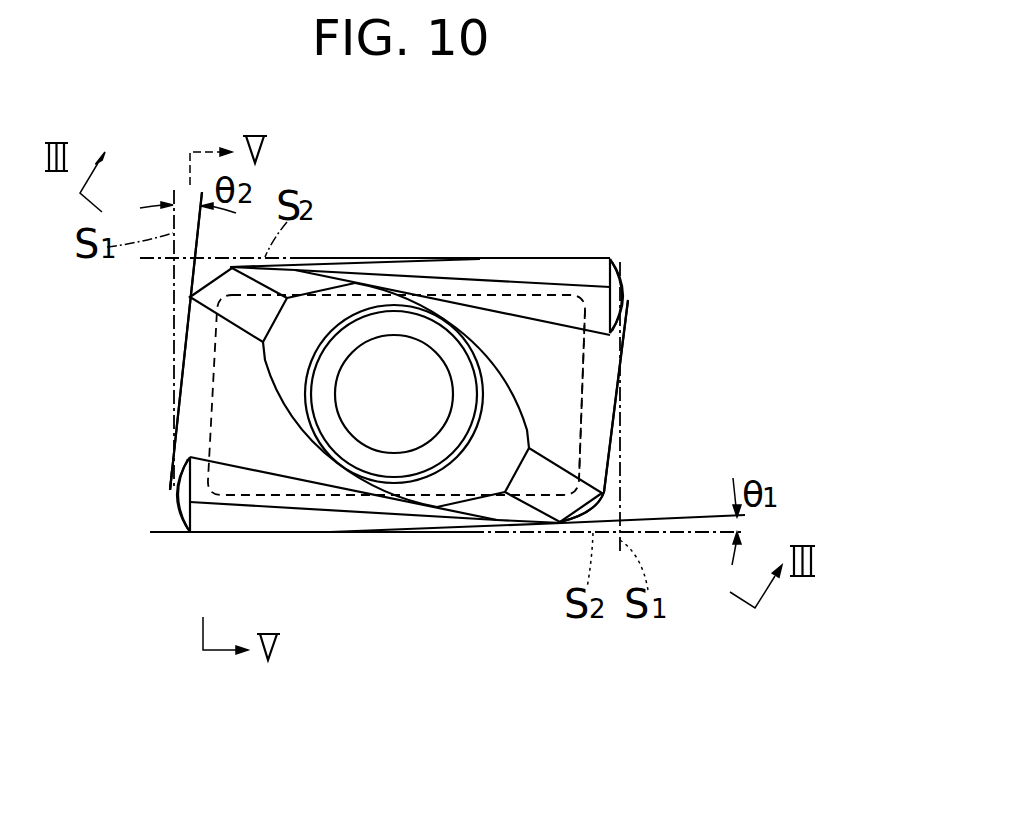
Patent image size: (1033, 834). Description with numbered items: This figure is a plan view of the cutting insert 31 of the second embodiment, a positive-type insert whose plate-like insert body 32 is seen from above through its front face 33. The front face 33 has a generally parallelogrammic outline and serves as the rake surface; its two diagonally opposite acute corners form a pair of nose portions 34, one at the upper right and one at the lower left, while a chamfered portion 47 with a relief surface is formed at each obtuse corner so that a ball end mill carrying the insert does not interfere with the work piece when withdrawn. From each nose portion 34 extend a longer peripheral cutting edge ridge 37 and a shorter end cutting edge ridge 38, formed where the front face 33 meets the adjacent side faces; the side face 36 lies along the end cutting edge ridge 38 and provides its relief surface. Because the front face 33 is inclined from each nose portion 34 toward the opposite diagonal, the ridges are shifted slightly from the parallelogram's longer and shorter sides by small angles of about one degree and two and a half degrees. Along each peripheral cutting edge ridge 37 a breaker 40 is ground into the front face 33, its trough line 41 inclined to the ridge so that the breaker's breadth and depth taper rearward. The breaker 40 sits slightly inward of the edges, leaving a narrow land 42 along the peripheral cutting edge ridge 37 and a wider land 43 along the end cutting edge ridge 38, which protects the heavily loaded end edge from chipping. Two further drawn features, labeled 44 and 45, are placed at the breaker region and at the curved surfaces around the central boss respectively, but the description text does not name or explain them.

The cutting insert 31 is at (550, 153).
The insert body 32 is at (652, 360).
The front face 33 is at (560, 393).
The nose portion 34 is at (622, 262).
The side face 36 is at (187, 322).
The peripheral cutting edge ridge 37 is at (400, 395).
The end cutting edge ridge 38 is at (168, 495).
The breaker 40 is at (568, 272).
The trough line 41 is at (523, 283).
The land 42 is at (433, 257).
The land 43 is at (630, 295).
The rake face 44 is at (547, 270).
The chip breaker surface 45 is at (535, 307).
The chamfered portion 47 is at (603, 500).